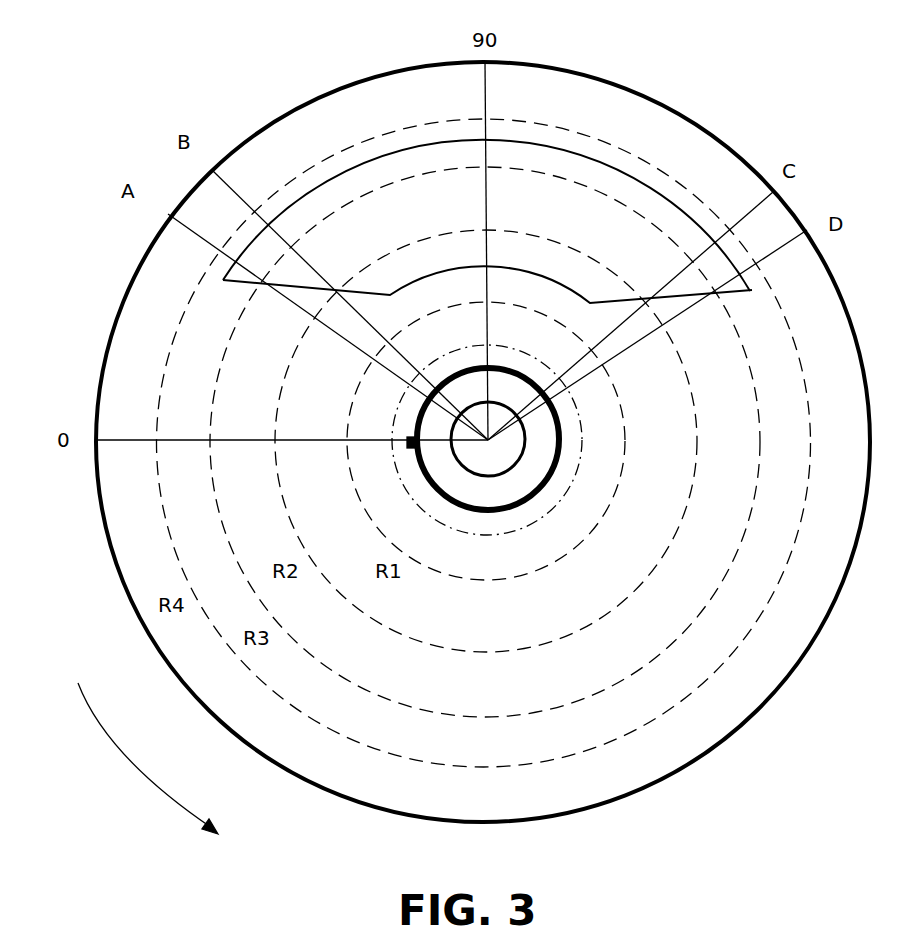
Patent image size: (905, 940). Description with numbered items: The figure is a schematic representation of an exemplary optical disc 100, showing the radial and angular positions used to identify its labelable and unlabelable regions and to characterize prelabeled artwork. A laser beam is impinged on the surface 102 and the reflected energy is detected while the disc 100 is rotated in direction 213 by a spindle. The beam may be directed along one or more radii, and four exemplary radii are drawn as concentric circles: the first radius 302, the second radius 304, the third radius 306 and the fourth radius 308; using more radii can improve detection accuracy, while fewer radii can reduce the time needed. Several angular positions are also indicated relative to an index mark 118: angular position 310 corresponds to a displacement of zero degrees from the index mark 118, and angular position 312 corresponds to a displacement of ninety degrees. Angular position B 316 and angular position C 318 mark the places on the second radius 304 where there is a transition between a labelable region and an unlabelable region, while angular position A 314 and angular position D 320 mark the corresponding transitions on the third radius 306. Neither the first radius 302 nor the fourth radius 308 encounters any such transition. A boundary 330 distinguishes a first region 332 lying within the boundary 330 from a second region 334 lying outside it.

The optical disc 100 is at (483, 425).
The surface 102 is at (732, 712).
The index mark 118 is at (409, 447).
The direction 213 is at (127, 757).
The radius R1 302 is at (438, 573).
The radius R2 304 is at (370, 613).
The radius R3 306 is at (343, 677).
The radius R4 308 is at (365, 747).
The angular position 310 is at (123, 440).
The angular position 312 is at (483, 76).
The angular position A 314 is at (184, 222).
The angular position B 316 is at (225, 182).
The angular position C 318 is at (750, 210).
The angular position D 320 is at (780, 247).
The boundary 330 is at (578, 160).
The first region 332 is at (487, 262).
The second region 334 is at (654, 623).